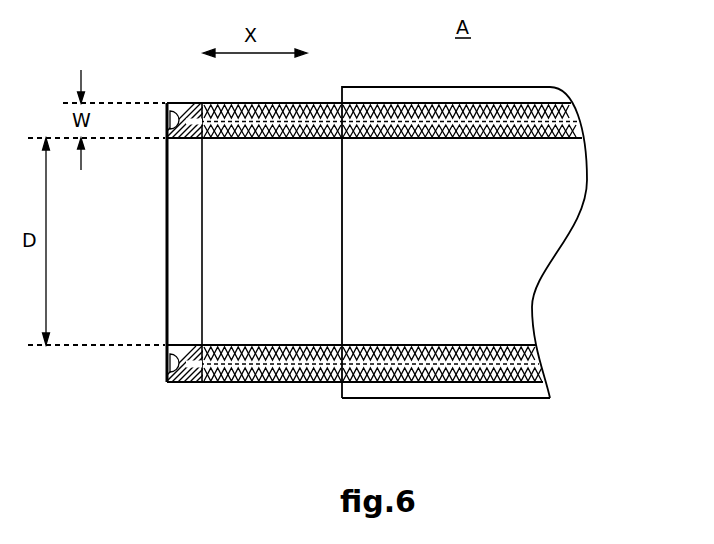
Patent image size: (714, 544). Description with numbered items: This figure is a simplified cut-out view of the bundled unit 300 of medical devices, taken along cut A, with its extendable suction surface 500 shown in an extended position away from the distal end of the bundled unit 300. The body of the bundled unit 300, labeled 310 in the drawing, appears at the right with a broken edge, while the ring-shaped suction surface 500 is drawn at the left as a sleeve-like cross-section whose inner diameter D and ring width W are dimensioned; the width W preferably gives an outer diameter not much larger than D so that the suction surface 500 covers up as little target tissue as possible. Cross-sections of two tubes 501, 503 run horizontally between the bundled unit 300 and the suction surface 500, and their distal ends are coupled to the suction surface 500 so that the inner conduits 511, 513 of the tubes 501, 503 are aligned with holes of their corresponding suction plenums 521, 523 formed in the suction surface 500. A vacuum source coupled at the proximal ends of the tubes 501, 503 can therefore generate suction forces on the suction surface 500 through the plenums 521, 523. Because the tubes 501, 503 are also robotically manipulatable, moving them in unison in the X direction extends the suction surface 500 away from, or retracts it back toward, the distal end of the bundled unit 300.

The bundled unit 300 is at (539, 58).
The ferrule body 310 is at (375, 87).
The suction surface 500 is at (165, 292).
The tube 501 is at (255, 103).
The tube 503 is at (232, 391).
The inner conduit 511 is at (192, 109).
The inner conduit 513 is at (193, 380).
The suction plenum 521 is at (158, 133).
The suction plenum 523 is at (155, 369).